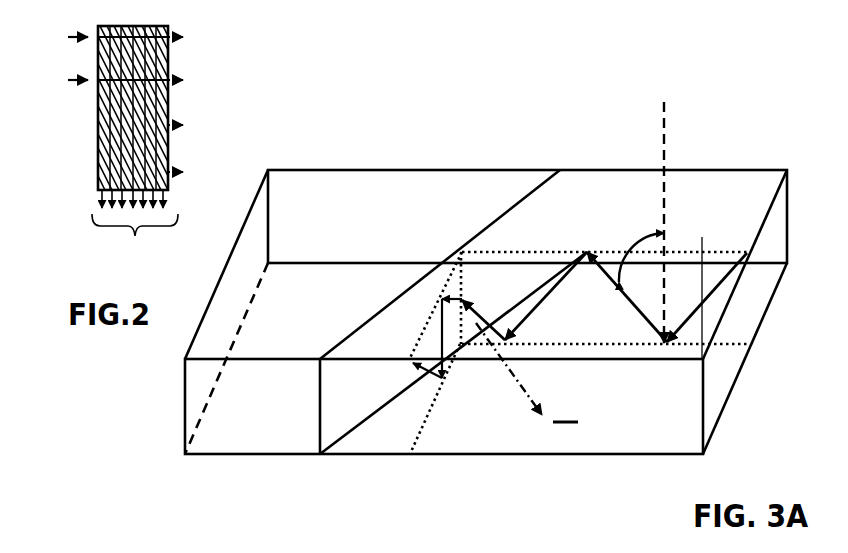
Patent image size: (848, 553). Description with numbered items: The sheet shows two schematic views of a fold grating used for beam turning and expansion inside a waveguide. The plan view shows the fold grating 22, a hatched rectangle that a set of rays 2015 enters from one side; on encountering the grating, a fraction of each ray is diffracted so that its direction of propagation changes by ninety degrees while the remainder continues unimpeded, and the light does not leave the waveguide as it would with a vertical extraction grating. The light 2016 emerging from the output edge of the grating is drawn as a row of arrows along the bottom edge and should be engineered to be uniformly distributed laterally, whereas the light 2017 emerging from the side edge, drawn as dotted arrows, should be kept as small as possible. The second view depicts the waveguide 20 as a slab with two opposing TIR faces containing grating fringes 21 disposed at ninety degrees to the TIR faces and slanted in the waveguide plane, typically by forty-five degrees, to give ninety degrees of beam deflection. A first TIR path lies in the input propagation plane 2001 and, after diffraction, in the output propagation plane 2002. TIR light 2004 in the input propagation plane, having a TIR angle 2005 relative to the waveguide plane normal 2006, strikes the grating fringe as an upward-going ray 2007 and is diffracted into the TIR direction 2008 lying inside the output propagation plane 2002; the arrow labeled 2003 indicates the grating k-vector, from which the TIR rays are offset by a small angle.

In FIG. 3A, the waveguide 20 is at (282, 168).
In FIG. 3A, the grating fringes 21 is at (318, 420).
In FIG. 2, the fold grating 22 is at (100, 125).
In FIG. 3A, the input propagation plane 2001 is at (688, 343).
In FIG. 3A, the output propagation plane 2002 is at (410, 447).
In FIG. 3A, the wave vector k direction 2003 is at (532, 405).
In FIG. 3A, the TIR light 2004 is at (702, 237).
In FIG. 3A, the TIR angle 2005 is at (648, 227).
In FIG. 3A, the waveguide plane normal 2006 is at (653, 210).
In FIG. 3A, the upward-going ray 2007 is at (483, 320).
In FIG. 3A, the TIR direction 2008 is at (445, 297).
In FIG. 2, the set of rays 2015 is at (73, 55).
In FIG. 2, the light emerging from the output edge 2016 is at (134, 231).
In FIG. 2, the light emerging from the side edge 2017 is at (207, 88).